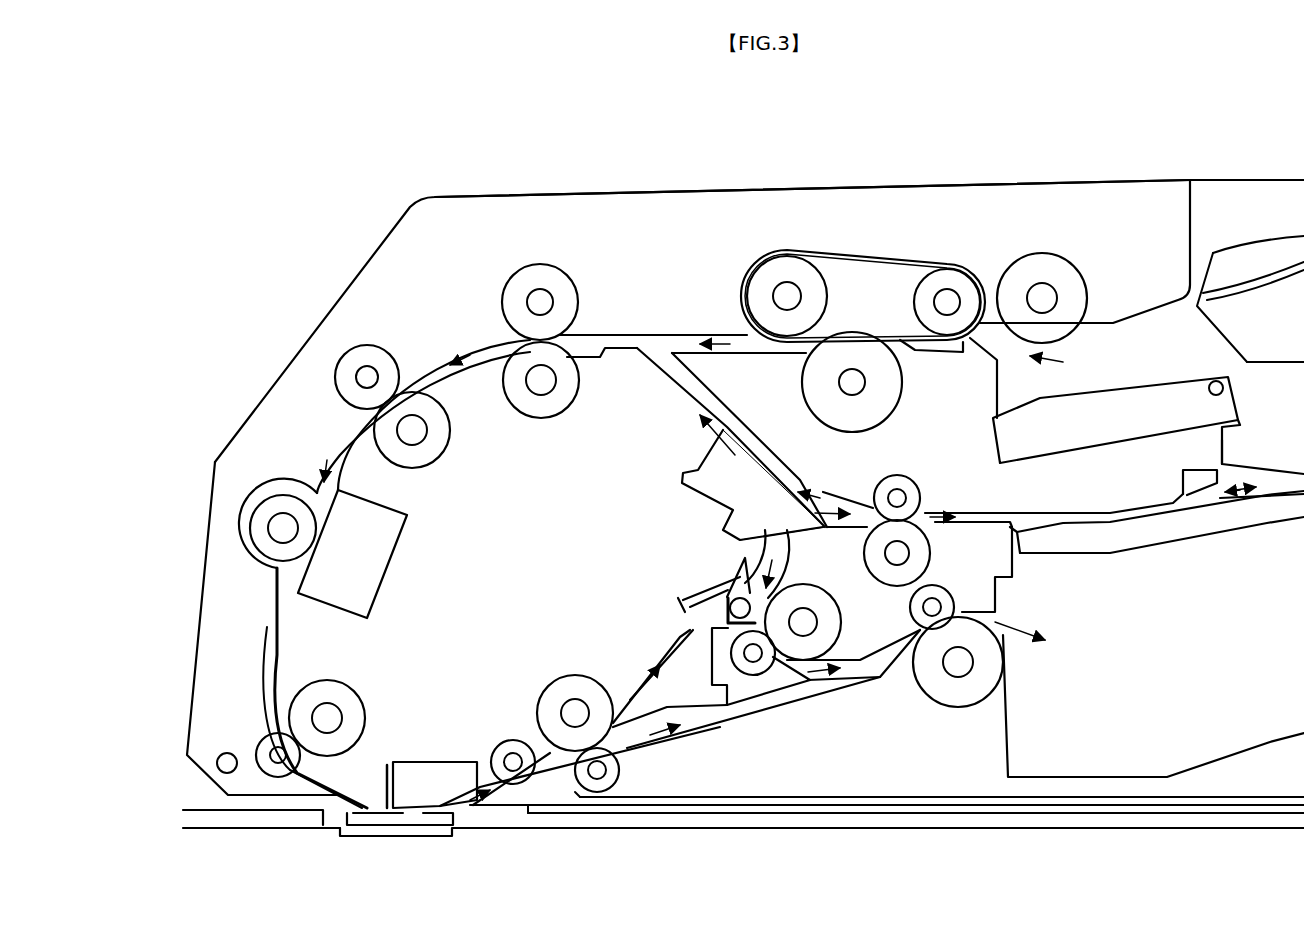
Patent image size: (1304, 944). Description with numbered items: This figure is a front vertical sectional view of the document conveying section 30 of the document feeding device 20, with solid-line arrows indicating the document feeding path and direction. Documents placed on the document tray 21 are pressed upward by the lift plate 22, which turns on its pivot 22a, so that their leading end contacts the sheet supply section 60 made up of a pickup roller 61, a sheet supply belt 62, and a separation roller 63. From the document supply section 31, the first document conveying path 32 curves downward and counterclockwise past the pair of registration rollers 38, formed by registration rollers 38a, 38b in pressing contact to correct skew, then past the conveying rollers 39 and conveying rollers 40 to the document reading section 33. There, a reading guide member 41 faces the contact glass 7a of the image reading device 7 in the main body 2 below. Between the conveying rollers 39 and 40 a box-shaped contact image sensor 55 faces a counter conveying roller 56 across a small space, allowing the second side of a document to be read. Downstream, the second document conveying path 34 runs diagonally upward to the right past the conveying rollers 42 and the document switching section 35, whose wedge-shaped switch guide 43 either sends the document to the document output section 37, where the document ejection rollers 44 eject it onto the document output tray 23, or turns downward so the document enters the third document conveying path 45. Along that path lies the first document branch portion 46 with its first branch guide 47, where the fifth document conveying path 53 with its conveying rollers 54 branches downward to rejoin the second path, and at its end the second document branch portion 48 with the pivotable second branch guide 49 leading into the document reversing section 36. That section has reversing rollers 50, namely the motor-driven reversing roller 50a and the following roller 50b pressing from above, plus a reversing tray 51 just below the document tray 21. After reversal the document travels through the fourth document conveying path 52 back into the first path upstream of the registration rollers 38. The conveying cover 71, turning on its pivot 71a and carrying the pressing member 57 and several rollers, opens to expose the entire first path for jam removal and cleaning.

The main body 2 is at (195, 800).
The image reading device 7 is at (325, 852).
The contact glass 7a is at (381, 836).
The document feeding device 20 is at (1222, 128).
The document tray 21 is at (1255, 361).
The lift plate 22 is at (1148, 355).
The pivot 22a is at (1213, 383).
The document output tray 23 is at (1128, 777).
The document conveying section 30 is at (312, 265).
The document supply section 31 is at (1090, 356).
The first document conveying path 32 is at (633, 335).
The document reading section 33 is at (418, 816).
The second document conveying path 34 is at (748, 708).
The document switching section 35 is at (618, 697).
The document reversing section 36 is at (1018, 512).
The document output section 37 is at (1005, 660).
The registration rollers 38 is at (551, 347).
The registration roller 38a is at (538, 418).
The registration roller 38b is at (518, 266).
The conveying rollers 39 is at (403, 360).
The conveying rollers 40 is at (357, 688).
The reading guide member 41 is at (435, 785).
The conveying rollers 42 is at (527, 697).
The switch guide 43 is at (790, 666).
The document ejection rollers 44 is at (958, 712).
The third document conveying path 45 is at (680, 600).
The first document branch portion 46 is at (730, 572).
The first branch guide 47 is at (726, 597).
The second document branch portion 48 is at (826, 490).
The second branch guide 49 is at (753, 485).
The reversing rollers 50 is at (938, 518).
The reversing roller 50a is at (932, 553).
The following roller 50b is at (922, 492).
The reversing tray 51 is at (1148, 542).
The fourth document conveying path 52 is at (728, 432).
The fifth document conveying path 53 is at (773, 560).
The conveying rollers 54 is at (848, 628).
The contact image sensor 55 is at (398, 575).
The counter conveying roller 56 is at (287, 495).
The pressing member 57 is at (272, 622).
The sheet supply section 60 is at (875, 276).
The pickup roller 61 is at (1025, 252).
The sheet supply belt 62 is at (745, 268).
The separation roller 63 is at (803, 382).
The conveying cover 71 is at (528, 197).
The pivot 71a is at (222, 753).